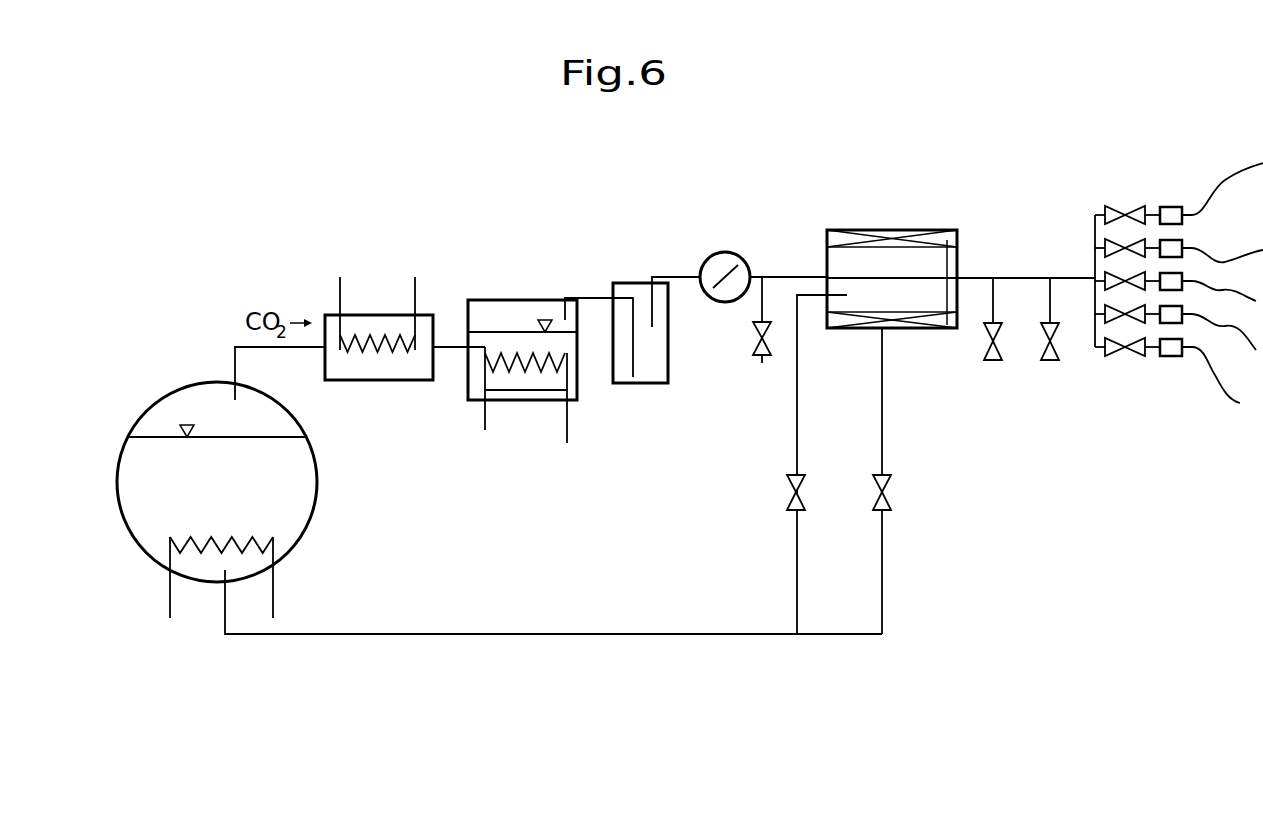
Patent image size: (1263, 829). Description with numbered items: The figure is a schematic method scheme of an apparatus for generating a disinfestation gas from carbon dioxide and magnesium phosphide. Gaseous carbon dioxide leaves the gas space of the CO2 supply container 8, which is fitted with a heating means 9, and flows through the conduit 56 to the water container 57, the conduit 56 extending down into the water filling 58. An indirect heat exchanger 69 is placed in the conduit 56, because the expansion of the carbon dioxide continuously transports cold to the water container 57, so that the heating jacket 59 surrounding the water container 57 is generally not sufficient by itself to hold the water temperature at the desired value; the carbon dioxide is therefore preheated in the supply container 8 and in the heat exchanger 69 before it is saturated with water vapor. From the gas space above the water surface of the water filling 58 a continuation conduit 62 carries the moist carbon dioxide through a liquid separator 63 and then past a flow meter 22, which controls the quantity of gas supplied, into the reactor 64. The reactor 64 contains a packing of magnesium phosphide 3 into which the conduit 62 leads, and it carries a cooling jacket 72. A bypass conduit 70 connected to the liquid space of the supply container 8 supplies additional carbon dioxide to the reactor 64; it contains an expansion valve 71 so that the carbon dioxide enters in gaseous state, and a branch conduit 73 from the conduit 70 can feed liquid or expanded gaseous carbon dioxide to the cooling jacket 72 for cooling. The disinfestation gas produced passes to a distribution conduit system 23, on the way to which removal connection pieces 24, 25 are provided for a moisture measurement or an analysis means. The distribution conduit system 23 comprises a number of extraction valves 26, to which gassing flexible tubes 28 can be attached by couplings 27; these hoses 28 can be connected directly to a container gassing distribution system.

The magnesium phosphide packing 3 is at (925, 295).
The CO2 supply container 8 is at (145, 412).
The heating means 9 is at (273, 592).
The flow meter 22 is at (733, 252).
The distribution conduit system 23 is at (1141, 382).
The removal connection piece 24 is at (767, 320).
The removal connection piece 25 is at (1050, 366).
The extraction valves 26 is at (1127, 210).
The couplings 27 is at (1173, 207).
The gassing flexible tubes 28 is at (1223, 395).
The conduit 56 is at (235, 358).
The water container 57 is at (490, 300).
The water filling 58 is at (507, 347).
The heating jacket 59 is at (565, 423).
The continuation conduit 62 is at (588, 297).
The liquid separator 63 is at (520, 317).
The reactor 64 is at (868, 237).
The indirect heat exchanger 69 is at (372, 315).
The bypass conduit 70 is at (472, 634).
The expansion valve 71 is at (800, 492).
The cooling jacket 72 is at (947, 323).
The branch conduit 73 is at (888, 490).